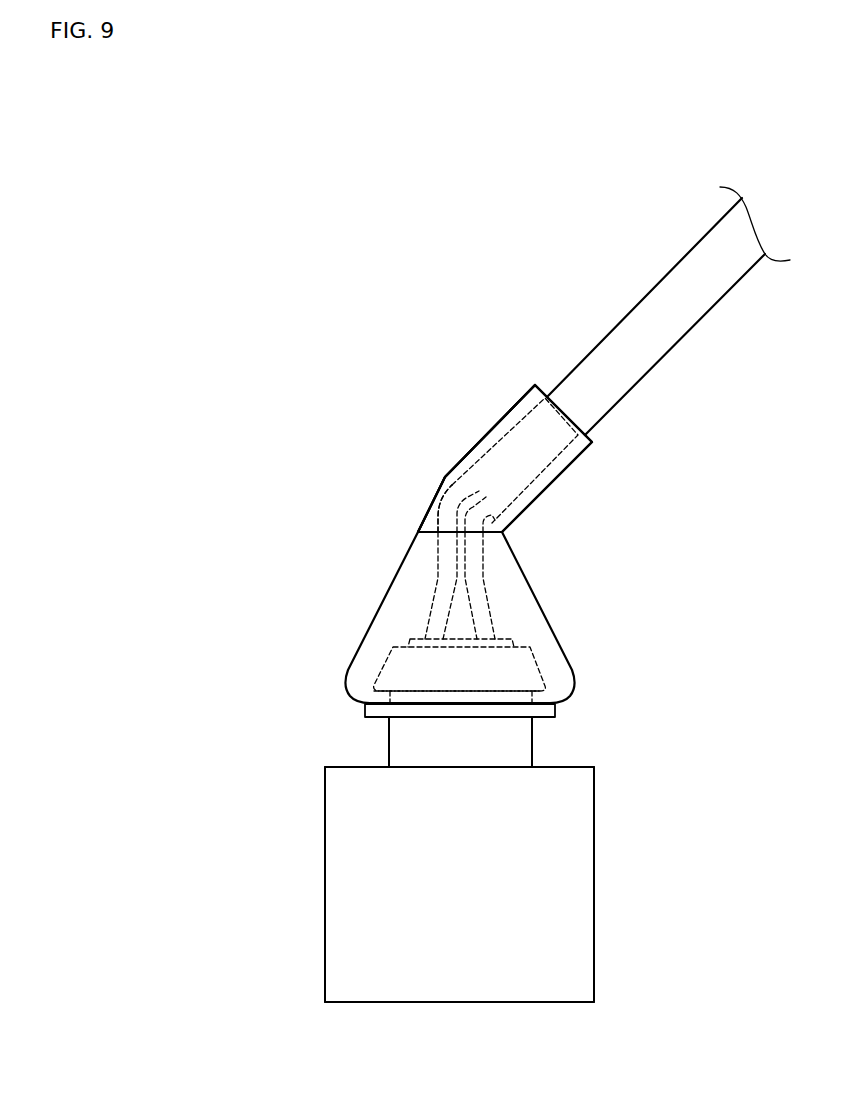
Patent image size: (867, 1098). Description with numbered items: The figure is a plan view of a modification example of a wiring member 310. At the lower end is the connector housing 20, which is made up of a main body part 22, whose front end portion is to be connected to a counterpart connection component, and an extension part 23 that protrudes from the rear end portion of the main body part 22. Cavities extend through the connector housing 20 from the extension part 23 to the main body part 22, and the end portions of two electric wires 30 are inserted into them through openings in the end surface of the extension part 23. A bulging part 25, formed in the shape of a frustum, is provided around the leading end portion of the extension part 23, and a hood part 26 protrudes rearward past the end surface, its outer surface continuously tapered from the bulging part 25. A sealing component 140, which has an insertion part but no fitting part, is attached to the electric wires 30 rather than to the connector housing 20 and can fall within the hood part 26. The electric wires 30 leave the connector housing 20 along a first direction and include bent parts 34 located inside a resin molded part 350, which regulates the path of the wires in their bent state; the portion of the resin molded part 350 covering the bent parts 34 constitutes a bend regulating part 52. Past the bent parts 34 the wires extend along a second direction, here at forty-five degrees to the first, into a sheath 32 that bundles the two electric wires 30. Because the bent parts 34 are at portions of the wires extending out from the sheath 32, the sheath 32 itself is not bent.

The wiring member 310 is at (348, 134).
The sheath 32 is at (617, 385).
The resin molded part 350 is at (547, 487).
The bend regulating part 52 is at (441, 481).
The bent parts 34 is at (436, 518).
The electric wires 30 is at (468, 584).
The sealing component 140 is at (512, 635).
The hood part 26 is at (533, 645).
The bulging part 25 is at (543, 675).
The extension part 23 is at (512, 738).
The connector housing 20 is at (322, 875).
The main body part 22 is at (595, 908).